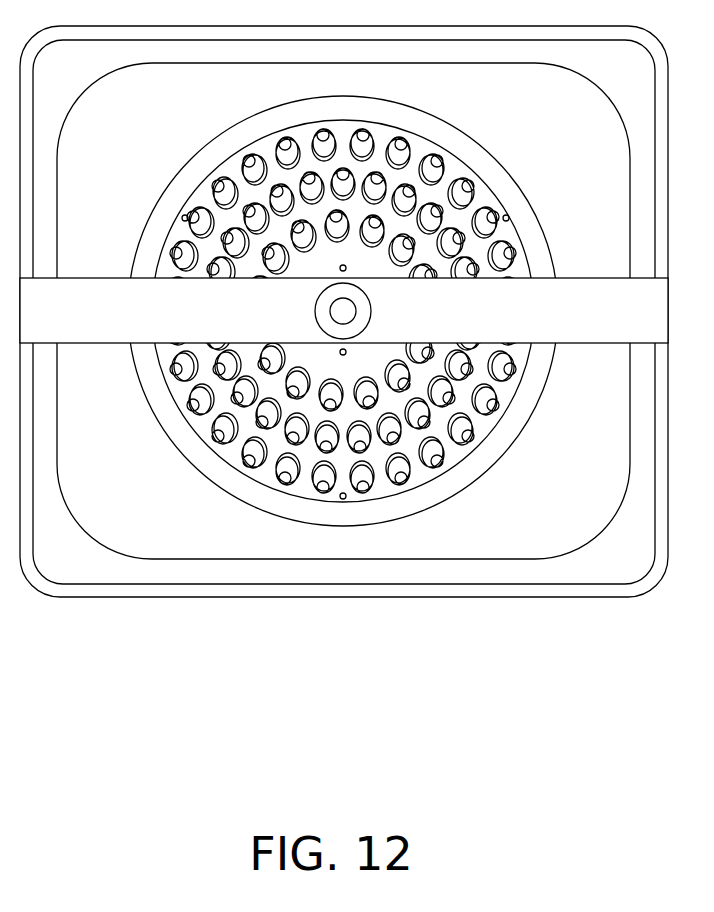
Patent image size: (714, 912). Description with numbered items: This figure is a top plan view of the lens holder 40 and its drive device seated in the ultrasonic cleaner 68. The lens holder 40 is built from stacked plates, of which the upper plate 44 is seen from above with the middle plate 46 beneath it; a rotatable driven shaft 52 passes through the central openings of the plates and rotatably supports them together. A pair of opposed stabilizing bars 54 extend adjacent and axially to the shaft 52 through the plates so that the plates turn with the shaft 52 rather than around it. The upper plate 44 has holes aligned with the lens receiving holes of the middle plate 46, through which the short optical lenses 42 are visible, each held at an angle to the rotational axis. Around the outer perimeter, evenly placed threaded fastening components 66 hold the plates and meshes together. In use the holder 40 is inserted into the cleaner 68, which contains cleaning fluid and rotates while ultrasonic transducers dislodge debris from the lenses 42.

The lens holder 40 is at (186, 460).
The optical lenses 42 is at (183, 377).
The upper plate 44 is at (382, 490).
The middle plate 46 is at (278, 505).
The driven shaft 52 is at (348, 311).
The stabilizing bars 54 is at (343, 265).
The threaded fastening components 66 is at (182, 216).
The ultrasonic cleaner 68 is at (120, 592).